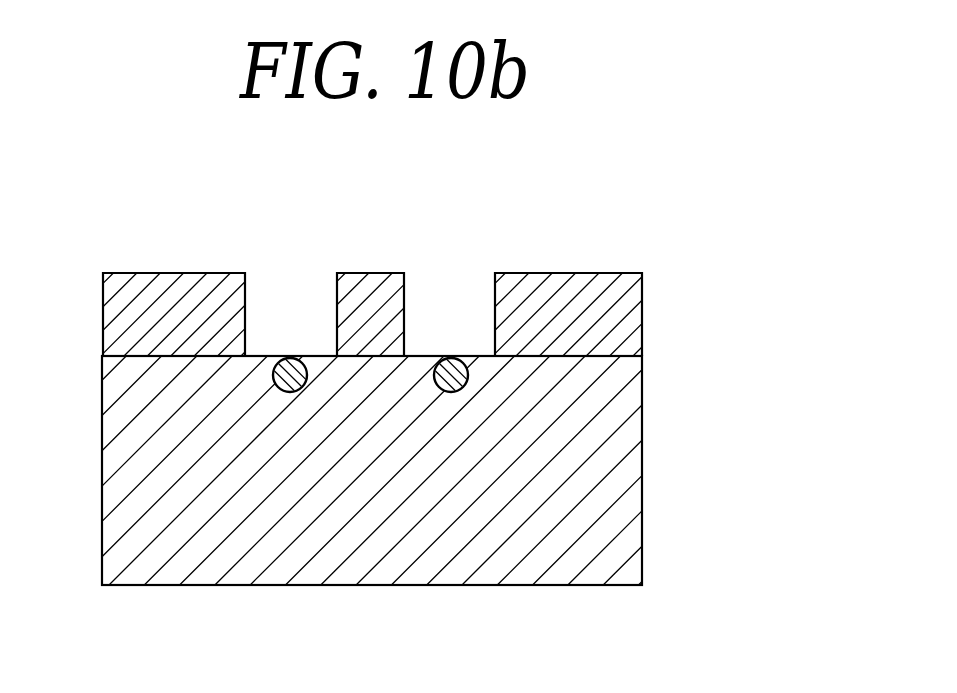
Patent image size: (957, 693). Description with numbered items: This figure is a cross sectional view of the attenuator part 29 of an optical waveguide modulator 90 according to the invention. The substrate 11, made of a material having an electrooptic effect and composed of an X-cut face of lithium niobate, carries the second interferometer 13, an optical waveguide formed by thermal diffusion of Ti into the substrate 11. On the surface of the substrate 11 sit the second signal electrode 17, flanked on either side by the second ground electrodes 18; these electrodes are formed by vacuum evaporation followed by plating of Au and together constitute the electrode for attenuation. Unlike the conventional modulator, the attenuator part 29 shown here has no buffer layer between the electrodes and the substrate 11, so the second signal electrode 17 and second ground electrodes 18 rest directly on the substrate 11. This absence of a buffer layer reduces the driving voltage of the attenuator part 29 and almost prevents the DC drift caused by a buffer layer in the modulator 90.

The substrate 11 is at (590, 528).
The second interferometer 13 is at (286, 357).
The second signal electrode 17 is at (385, 300).
The second ground electrodes 18 is at (173, 312).
The attenuator part 29 is at (846, 283).
The optical waveguide modulator 90 is at (475, 373).